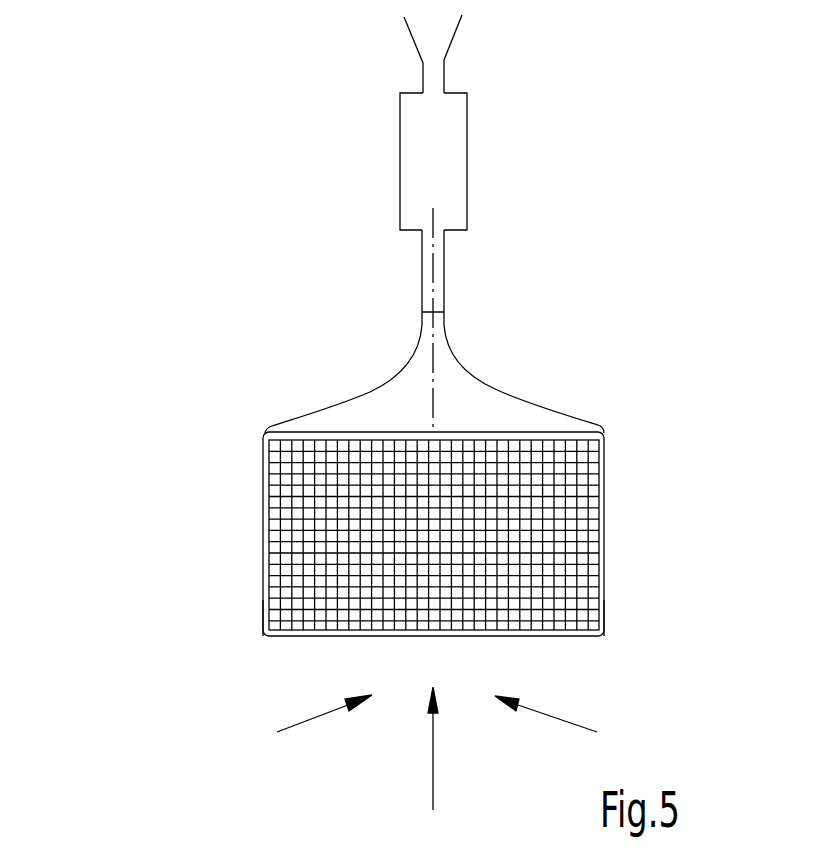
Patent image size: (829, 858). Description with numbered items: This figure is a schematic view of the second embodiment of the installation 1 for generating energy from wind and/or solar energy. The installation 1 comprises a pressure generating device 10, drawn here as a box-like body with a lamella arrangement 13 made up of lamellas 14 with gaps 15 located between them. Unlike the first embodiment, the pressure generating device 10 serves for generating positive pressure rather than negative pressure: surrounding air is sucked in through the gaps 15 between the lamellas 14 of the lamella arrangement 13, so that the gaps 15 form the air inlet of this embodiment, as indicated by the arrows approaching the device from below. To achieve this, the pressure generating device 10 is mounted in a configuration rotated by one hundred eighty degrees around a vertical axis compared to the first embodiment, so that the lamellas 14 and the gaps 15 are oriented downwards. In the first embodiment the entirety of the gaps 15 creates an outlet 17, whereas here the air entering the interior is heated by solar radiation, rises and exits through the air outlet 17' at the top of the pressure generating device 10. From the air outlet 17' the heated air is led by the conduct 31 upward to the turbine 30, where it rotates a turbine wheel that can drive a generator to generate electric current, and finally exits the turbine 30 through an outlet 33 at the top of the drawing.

The installation 1 is at (440, 365).
The pressure generating device 10 is at (250, 492).
The lamella arrangement 13 is at (570, 533).
The lamellas 14 is at (593, 583).
The gaps 15 is at (598, 593).
The outlet 17 is at (330, 366).
The air outlet 17' is at (562, 361).
The turbine 30 is at (445, 177).
The conduct 31 is at (433, 298).
The outlet 33 is at (437, 47).